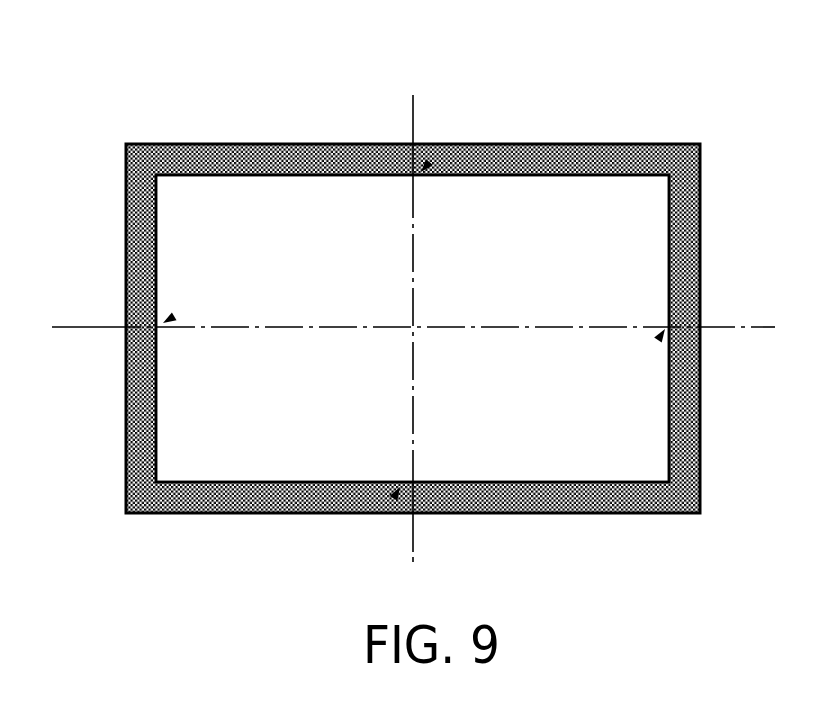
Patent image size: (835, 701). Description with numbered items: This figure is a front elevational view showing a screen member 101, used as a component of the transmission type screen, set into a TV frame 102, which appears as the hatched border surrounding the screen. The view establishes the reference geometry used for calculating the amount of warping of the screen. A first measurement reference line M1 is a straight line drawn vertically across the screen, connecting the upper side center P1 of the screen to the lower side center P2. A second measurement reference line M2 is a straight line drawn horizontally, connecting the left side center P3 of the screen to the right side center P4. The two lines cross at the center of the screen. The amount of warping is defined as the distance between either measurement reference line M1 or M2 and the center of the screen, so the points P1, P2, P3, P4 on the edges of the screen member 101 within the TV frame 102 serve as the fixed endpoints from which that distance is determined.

The screen member 101 is at (188, 232).
The TV frame 102 is at (690, 263).
The measurement reference line M1 is at (413, 115).
The measurement reference line M2 is at (62, 328).
The upper side center P1 is at (426, 165).
The lower side center P2 is at (394, 497).
The left side center P3 is at (174, 317).
The right side center P4 is at (658, 340).